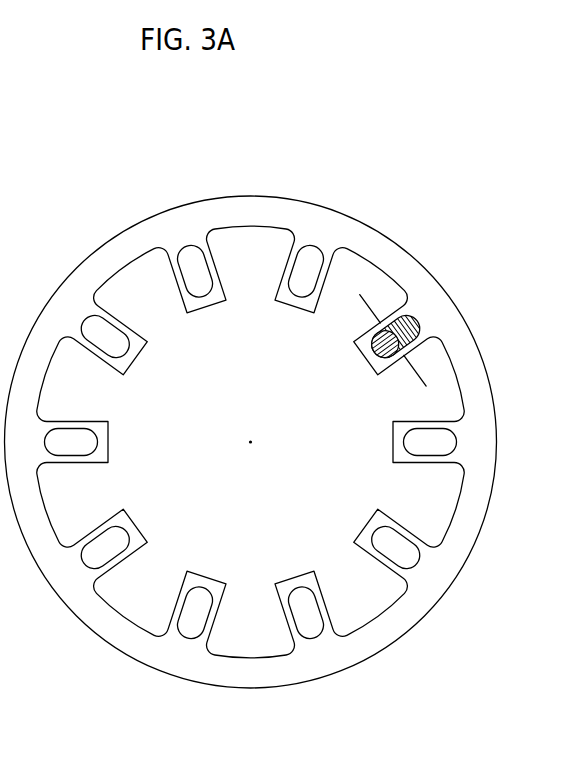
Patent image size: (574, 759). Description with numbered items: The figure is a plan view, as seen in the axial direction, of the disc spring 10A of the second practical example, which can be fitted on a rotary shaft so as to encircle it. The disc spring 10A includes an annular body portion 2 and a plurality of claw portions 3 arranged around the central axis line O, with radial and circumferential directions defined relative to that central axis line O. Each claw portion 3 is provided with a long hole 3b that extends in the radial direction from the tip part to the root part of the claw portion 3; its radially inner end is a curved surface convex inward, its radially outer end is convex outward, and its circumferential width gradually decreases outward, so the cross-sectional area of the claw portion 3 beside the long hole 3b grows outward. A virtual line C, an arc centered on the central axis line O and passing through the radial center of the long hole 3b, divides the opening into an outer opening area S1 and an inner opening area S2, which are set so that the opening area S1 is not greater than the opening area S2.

The disc spring 10A is at (119, 186).
The body portion 2 is at (308, 210).
The claw portion 3 is at (286, 297).
The long hole 3b is at (303, 272).
The opening area S1 is at (405, 324).
The opening area S2 is at (379, 355).
The virtual line C is at (417, 377).
The central axis line O is at (252, 440).